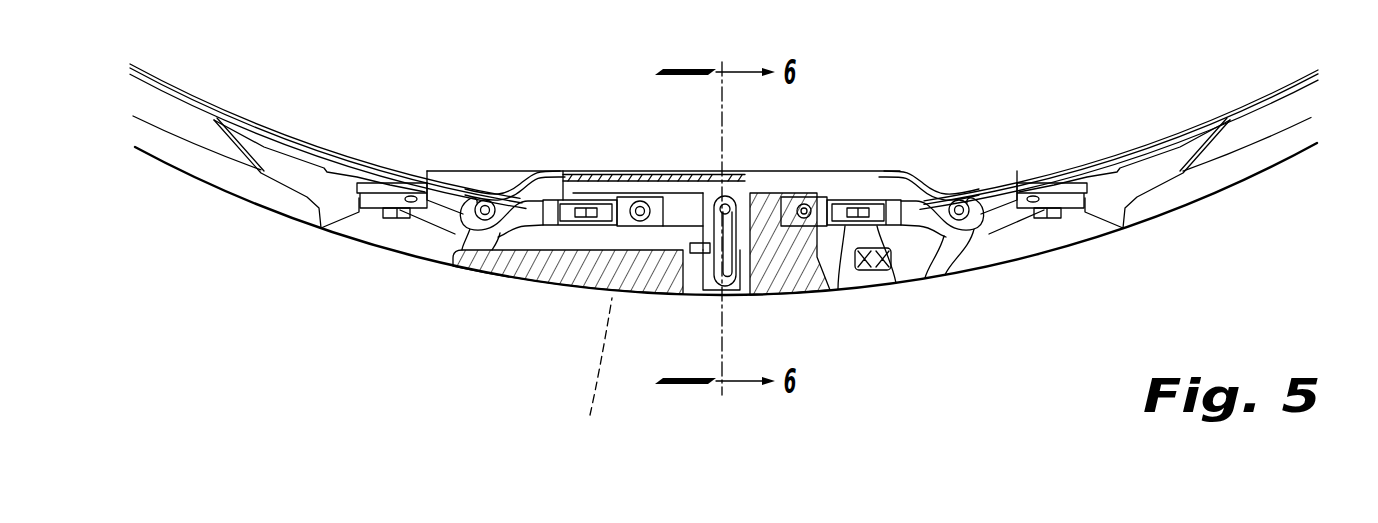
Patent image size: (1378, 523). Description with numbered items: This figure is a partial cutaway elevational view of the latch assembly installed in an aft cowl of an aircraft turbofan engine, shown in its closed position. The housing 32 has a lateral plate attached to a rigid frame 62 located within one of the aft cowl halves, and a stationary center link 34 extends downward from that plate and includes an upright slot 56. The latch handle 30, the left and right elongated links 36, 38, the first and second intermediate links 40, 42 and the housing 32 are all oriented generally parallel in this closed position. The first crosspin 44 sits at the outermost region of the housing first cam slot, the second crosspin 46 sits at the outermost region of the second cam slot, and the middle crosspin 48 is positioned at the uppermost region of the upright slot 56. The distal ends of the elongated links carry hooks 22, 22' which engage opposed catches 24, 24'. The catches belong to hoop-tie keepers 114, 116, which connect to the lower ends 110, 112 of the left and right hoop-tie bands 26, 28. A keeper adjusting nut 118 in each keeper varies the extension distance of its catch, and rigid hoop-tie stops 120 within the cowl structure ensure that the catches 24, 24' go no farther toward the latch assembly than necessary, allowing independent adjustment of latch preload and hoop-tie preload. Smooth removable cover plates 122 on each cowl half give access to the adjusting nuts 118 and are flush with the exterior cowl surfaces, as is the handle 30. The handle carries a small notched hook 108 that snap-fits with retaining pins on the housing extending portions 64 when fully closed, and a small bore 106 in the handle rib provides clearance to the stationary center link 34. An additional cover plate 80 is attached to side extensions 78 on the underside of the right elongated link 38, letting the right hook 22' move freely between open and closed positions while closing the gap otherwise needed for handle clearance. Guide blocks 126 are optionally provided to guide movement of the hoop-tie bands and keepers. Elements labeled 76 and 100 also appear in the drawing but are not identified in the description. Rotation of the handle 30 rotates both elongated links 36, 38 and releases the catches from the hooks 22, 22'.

The hook 22 is at (663, 149).
The hook 22' is at (978, 153).
The catch 24 is at (502, 168).
The catch 24' is at (978, 172).
The left hoop-tie band 26 is at (171, 100).
The right hoop-tie band 28 is at (1270, 98).
The latch handle 30 is at (596, 293).
The housing 32 is at (631, 170).
The stationary center link 34 is at (716, 288).
The left elongated link 36 is at (540, 192).
The right elongated link 38 is at (827, 203).
The first intermediate link 40 is at (684, 212).
The second intermediate link 42 is at (780, 198).
The first crosspin 44 is at (640, 205).
The second crosspin 46 is at (807, 195).
The middle crosspin 48 is at (735, 200).
The upright slot 56 is at (705, 290).
The rigid frame 62 is at (548, 208).
The extending portion 64 is at (572, 262).
The pivot pin 76 is at (556, 230).
The side extensions 78 is at (862, 270).
The additional cover plate 80 is at (923, 280).
The trim panel 100 is at (478, 263).
The small bore 106 is at (532, 236).
The notched hook 108 is at (613, 366).
The lower end 110 is at (352, 157).
The lower end 112 is at (1093, 162).
The hoop-tie keeper 114 is at (435, 185).
The hoop-tie keeper 116 is at (1028, 190).
The keeper adjusting nut 118 is at (387, 214).
The hoop-tie stops 120 is at (524, 240).
The removable cover plate 122 is at (394, 245).
The guide blocks 126 is at (254, 195).